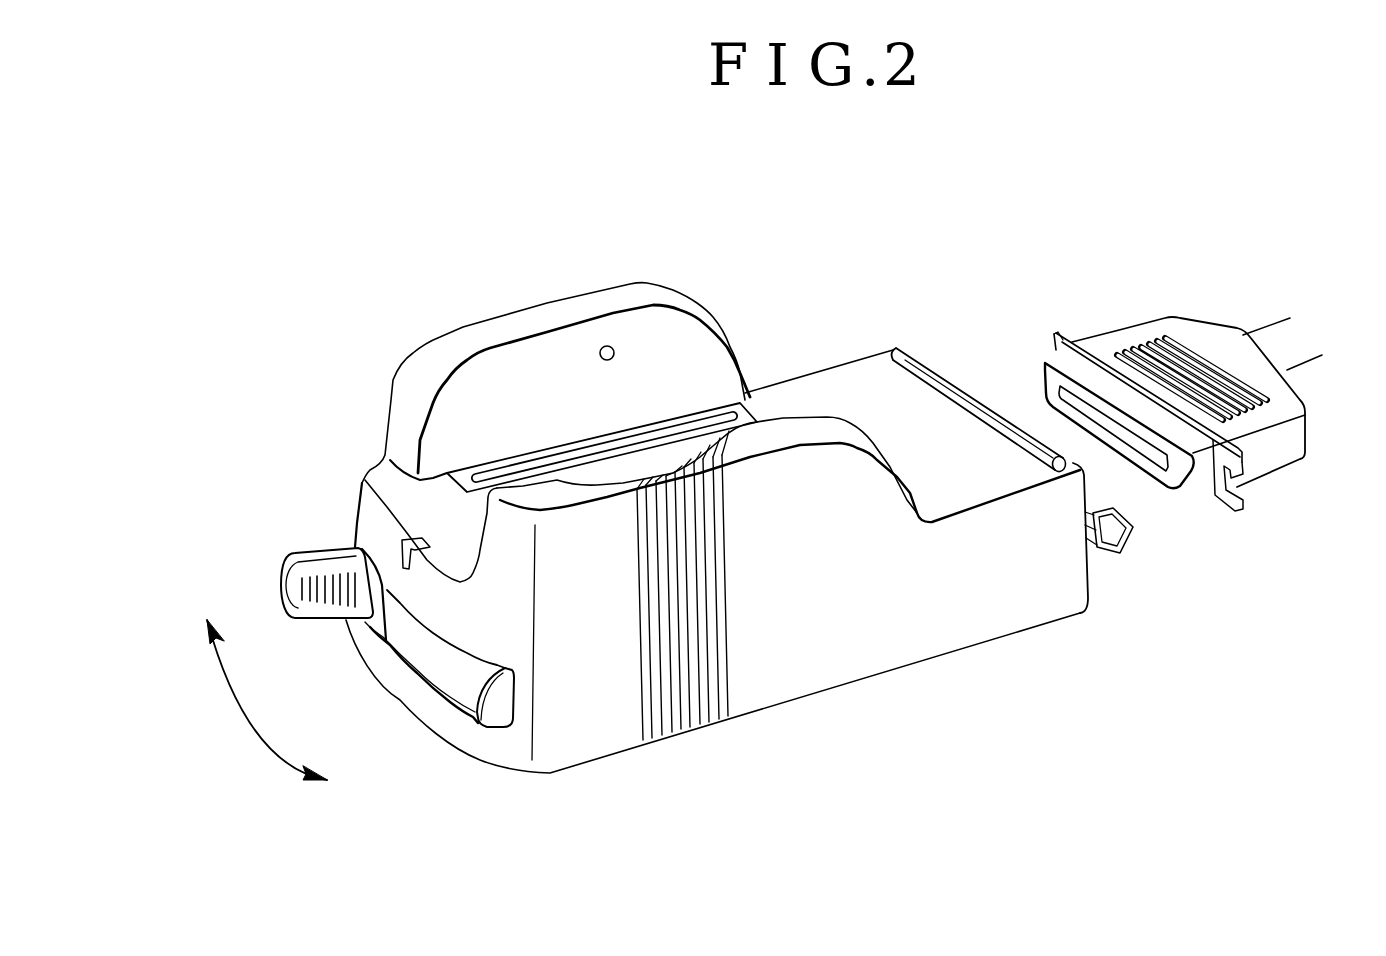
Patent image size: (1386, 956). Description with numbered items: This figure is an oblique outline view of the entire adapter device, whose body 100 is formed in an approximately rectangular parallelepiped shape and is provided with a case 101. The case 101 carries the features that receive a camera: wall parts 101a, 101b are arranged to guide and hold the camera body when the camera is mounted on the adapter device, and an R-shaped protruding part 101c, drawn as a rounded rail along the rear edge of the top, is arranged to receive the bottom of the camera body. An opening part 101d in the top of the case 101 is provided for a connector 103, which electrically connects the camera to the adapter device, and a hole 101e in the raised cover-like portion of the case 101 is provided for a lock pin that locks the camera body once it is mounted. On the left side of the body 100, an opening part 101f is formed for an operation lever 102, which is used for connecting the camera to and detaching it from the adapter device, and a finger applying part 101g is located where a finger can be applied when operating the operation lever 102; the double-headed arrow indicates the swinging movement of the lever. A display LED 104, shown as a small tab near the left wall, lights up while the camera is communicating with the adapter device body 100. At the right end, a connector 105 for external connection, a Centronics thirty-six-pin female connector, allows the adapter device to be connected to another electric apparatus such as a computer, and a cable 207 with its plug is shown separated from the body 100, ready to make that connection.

The adapter device body 100 is at (780, 683).
The case 101 is at (848, 377).
The wall part 101a is at (773, 448).
The wall part 101b is at (508, 327).
The R-shaped protruding part 101c is at (943, 387).
The opening part 101d is at (747, 413).
The hole 101e is at (605, 345).
The opening part 101f is at (433, 667).
The finger applying part 101g is at (500, 715).
The operation lever 102 is at (295, 552).
The connector 103 is at (510, 470).
The display LED 104 is at (410, 540).
The connector for external connection 105 is at (1110, 510).
The cable 207 is at (1288, 333).